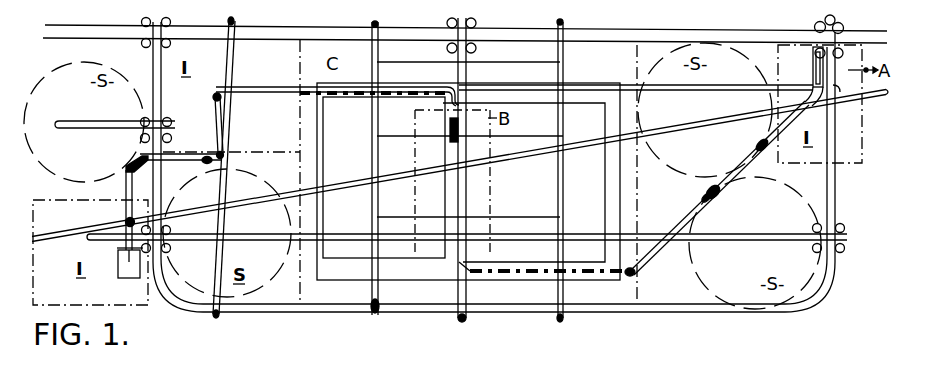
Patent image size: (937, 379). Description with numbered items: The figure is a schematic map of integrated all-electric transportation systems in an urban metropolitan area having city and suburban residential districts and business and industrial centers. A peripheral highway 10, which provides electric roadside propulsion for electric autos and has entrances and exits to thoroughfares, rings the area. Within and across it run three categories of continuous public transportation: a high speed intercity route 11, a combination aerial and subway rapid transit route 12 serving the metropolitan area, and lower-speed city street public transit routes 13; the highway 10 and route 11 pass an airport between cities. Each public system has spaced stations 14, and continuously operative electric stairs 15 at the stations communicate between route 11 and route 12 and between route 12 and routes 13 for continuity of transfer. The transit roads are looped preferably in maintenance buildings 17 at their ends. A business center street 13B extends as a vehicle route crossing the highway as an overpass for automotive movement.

The peripheral highway 10 is at (268, 309).
The high speed intercity route 11 is at (275, 197).
The rapid transit route 12 is at (241, 88).
The city street public transit route 13 is at (323, 125).
The business center street 13B is at (470, 290).
The station 14 is at (212, 164).
The electric stairs 15 is at (447, 140).
The maintenance building 17 is at (130, 279).